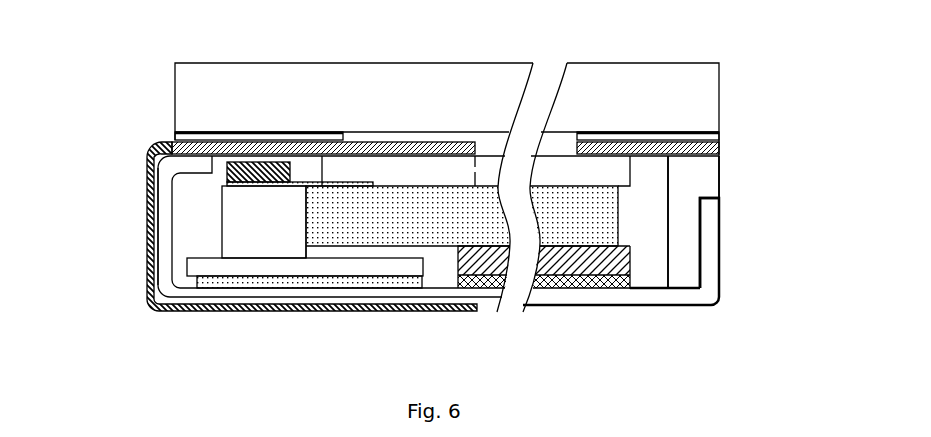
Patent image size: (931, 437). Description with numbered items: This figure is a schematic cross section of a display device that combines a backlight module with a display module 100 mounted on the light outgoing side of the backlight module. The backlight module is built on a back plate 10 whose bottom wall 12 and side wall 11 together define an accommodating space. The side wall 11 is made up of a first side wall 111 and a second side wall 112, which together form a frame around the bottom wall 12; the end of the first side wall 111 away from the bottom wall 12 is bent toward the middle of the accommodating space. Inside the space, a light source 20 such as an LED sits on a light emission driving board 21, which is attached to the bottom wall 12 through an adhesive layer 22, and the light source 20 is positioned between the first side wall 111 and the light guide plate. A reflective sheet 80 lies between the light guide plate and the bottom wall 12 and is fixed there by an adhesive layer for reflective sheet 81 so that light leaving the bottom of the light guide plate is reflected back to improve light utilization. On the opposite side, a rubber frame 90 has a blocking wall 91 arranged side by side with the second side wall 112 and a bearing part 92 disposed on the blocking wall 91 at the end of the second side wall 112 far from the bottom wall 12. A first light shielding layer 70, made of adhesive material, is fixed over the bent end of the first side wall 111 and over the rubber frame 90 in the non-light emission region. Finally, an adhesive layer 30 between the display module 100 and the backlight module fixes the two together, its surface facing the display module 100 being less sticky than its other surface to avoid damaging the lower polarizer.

The back plate 10 is at (95, 248).
The side wall 11 is at (444, 235).
The bottom wall 12 is at (223, 295).
The light source 20 is at (283, 247).
The light emission driving board 21 is at (340, 268).
The adhesive layer 22 is at (395, 282).
The adhesive layer 30 is at (707, 137).
The first light shielding layer 70 is at (228, 150).
The reflective sheet 80 is at (473, 265).
The adhesive layer for reflective sheet 81 is at (493, 280).
The rubber frame 90 is at (772, 172).
The blocking wall 91 is at (692, 225).
The bearing part 92 is at (707, 184).
The display module 100 is at (707, 96).
The first side wall 111 is at (164, 265).
The second side wall 112 is at (712, 250).